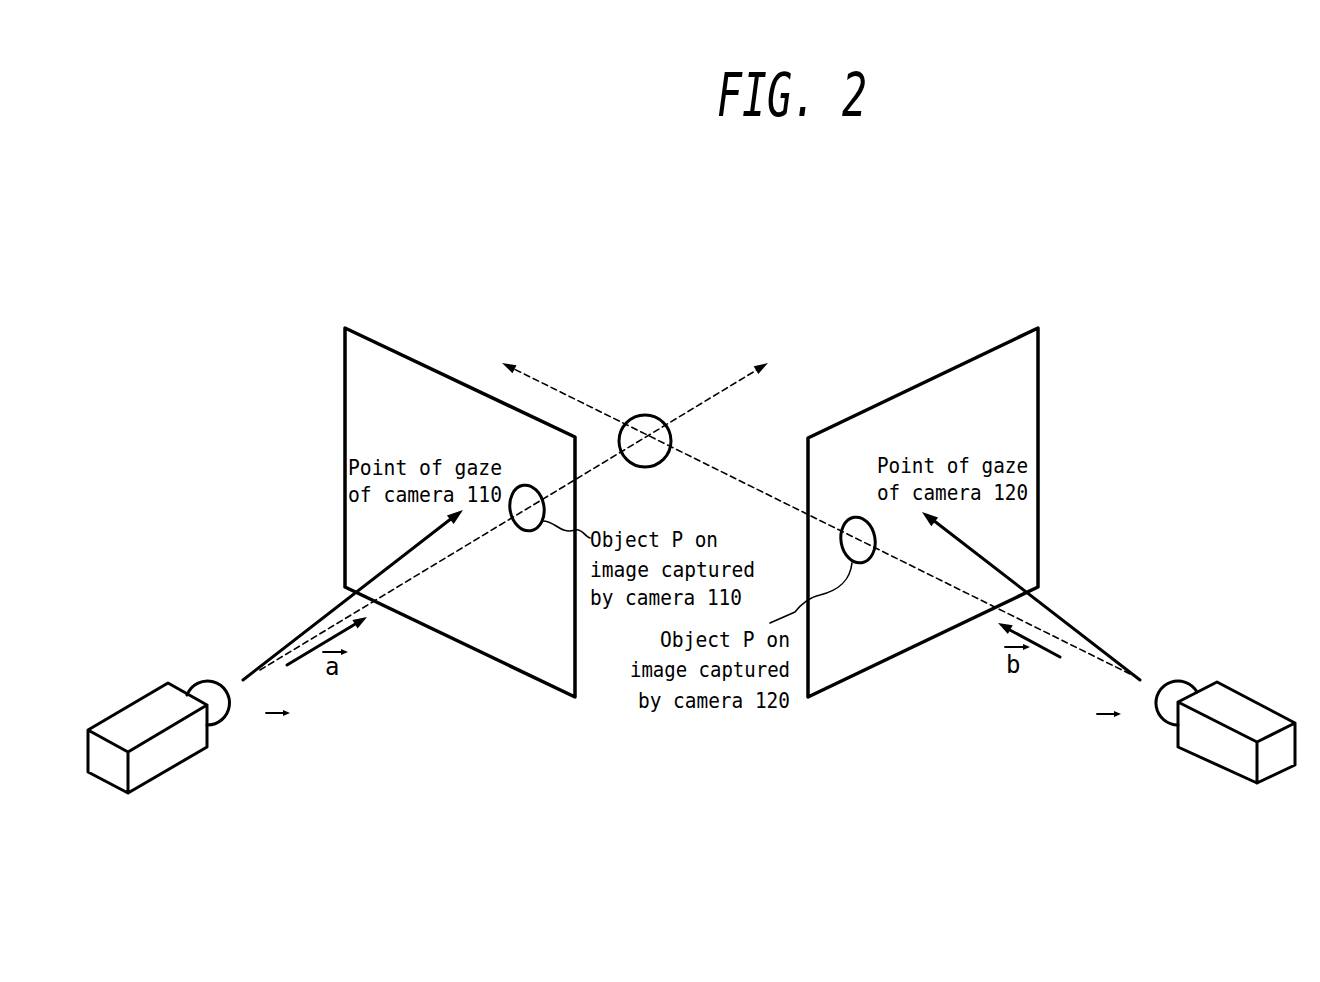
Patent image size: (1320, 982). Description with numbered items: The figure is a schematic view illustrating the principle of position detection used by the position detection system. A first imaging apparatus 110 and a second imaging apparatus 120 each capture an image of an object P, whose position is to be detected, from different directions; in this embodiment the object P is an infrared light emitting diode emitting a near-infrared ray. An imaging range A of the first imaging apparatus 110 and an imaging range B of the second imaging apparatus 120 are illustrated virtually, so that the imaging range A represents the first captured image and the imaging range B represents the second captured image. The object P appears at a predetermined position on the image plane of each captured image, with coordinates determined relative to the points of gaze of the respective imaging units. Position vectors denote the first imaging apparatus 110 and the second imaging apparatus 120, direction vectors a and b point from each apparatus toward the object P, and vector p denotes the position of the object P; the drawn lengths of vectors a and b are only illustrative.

The first imaging apparatus 110 is at (167, 755).
The second imaging apparatus 120 is at (1217, 745).
The imaging range A is at (345, 382).
The imaging range B is at (1039, 382).
The object P is at (660, 372).